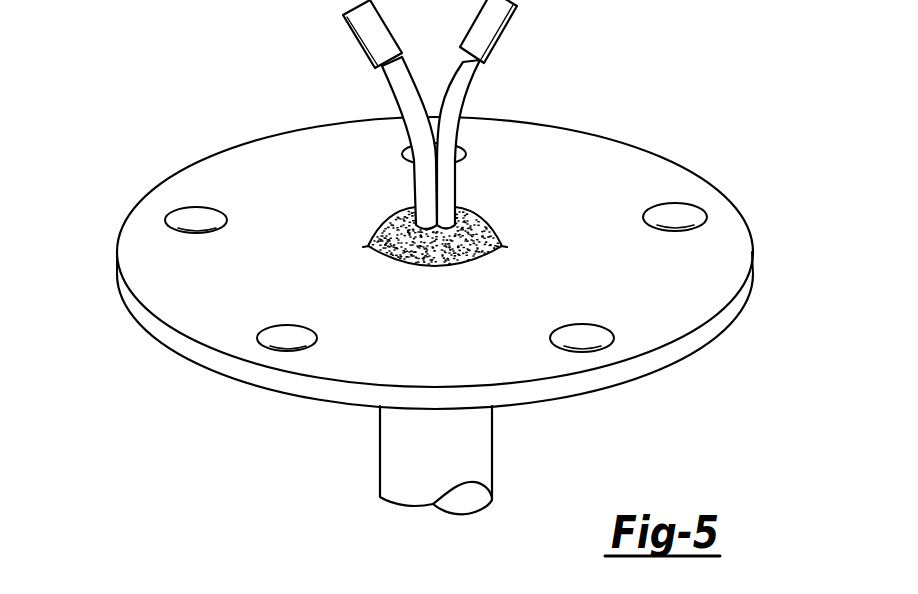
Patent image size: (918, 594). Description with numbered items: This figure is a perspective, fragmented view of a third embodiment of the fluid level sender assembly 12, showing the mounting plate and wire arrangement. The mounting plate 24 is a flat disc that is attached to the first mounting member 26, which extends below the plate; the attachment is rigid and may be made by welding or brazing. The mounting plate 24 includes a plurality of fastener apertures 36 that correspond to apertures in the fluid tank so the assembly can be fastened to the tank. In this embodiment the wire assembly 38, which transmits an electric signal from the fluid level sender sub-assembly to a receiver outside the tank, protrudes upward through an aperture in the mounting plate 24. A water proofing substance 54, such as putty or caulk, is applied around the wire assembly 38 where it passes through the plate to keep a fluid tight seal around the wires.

The fluid level sender assembly 12 is at (448, 257).
The mounting plate 24 is at (755, 273).
The first mounting member 26 is at (380, 452).
The fastener apertures 36 is at (212, 221).
The wire assembly 38 is at (455, 192).
The water proofing substance 54 is at (453, 243).